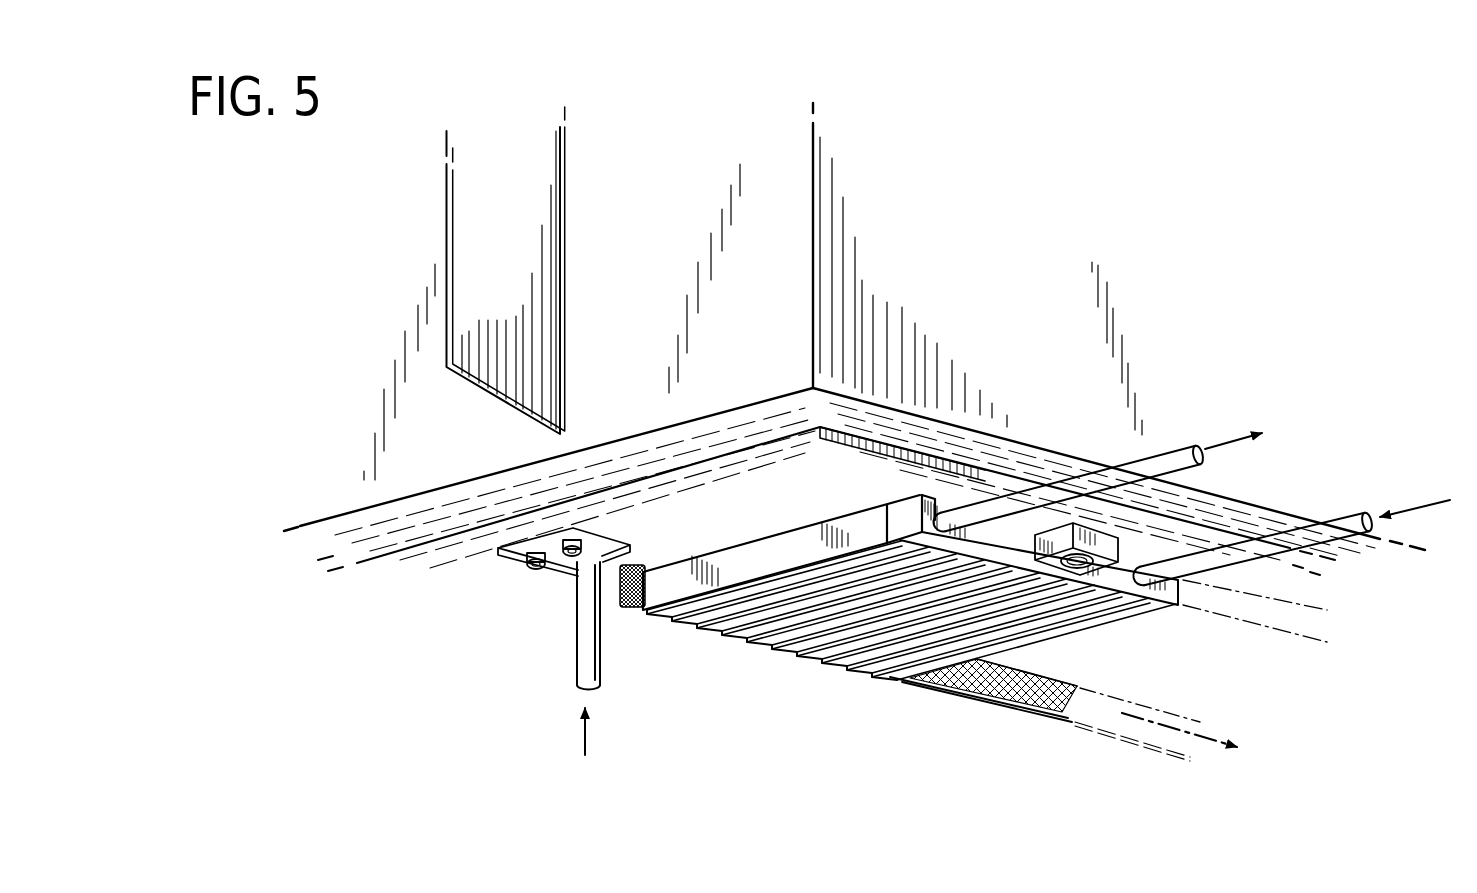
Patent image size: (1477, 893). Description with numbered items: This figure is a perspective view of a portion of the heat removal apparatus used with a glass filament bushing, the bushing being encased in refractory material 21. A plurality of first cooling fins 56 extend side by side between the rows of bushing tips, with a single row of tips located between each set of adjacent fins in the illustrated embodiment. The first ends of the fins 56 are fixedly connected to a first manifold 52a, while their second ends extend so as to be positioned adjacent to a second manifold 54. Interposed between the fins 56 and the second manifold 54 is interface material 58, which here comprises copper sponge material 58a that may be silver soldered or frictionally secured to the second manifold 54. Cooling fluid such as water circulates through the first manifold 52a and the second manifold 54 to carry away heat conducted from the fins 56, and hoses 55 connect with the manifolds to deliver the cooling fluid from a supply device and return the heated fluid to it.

The refractory material 21 is at (978, 251).
The first manifold 52a is at (933, 510).
The second manifold 54 is at (603, 585).
The hoses 55 is at (1170, 452).
The first cooling fins 56 is at (850, 620).
The interface material 58 is at (1028, 695).
The copper sponge material 58a is at (960, 678).